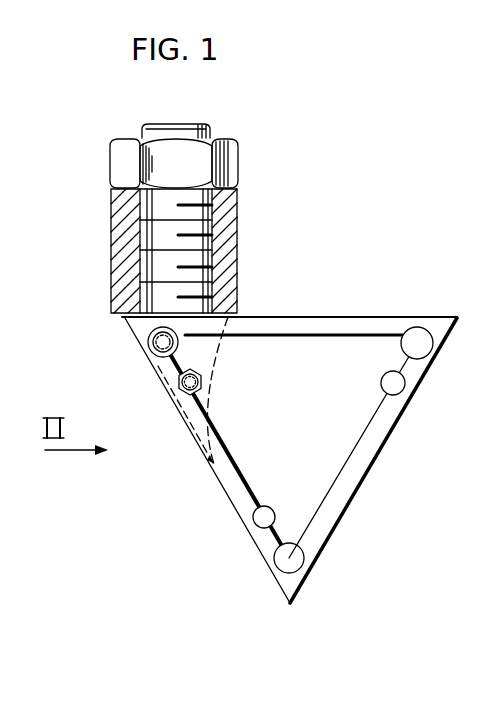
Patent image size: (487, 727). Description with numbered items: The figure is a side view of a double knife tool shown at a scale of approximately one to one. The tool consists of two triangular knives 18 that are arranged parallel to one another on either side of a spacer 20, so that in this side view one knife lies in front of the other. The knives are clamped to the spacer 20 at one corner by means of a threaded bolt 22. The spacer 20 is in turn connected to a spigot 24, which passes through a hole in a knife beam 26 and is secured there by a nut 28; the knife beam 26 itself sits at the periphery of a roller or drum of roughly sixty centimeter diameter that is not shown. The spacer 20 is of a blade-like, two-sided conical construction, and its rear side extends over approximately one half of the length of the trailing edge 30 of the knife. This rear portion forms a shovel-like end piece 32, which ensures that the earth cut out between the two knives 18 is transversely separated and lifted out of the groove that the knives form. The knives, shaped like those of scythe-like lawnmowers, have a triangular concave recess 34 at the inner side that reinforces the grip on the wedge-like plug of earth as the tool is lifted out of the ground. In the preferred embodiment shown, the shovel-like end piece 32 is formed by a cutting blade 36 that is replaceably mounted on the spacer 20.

The triangular knives 18 is at (240, 455).
The spacer 20 is at (158, 378).
The threaded bolt 22 is at (148, 346).
The spigot 24 is at (193, 289).
The knife beam 26 is at (229, 212).
The nut 28 is at (233, 145).
The trailing edge 30 is at (270, 569).
The shovel-like end piece 32 is at (197, 448).
The triangular concave recess 34 is at (319, 496).
The cutting blade 36 is at (160, 390).